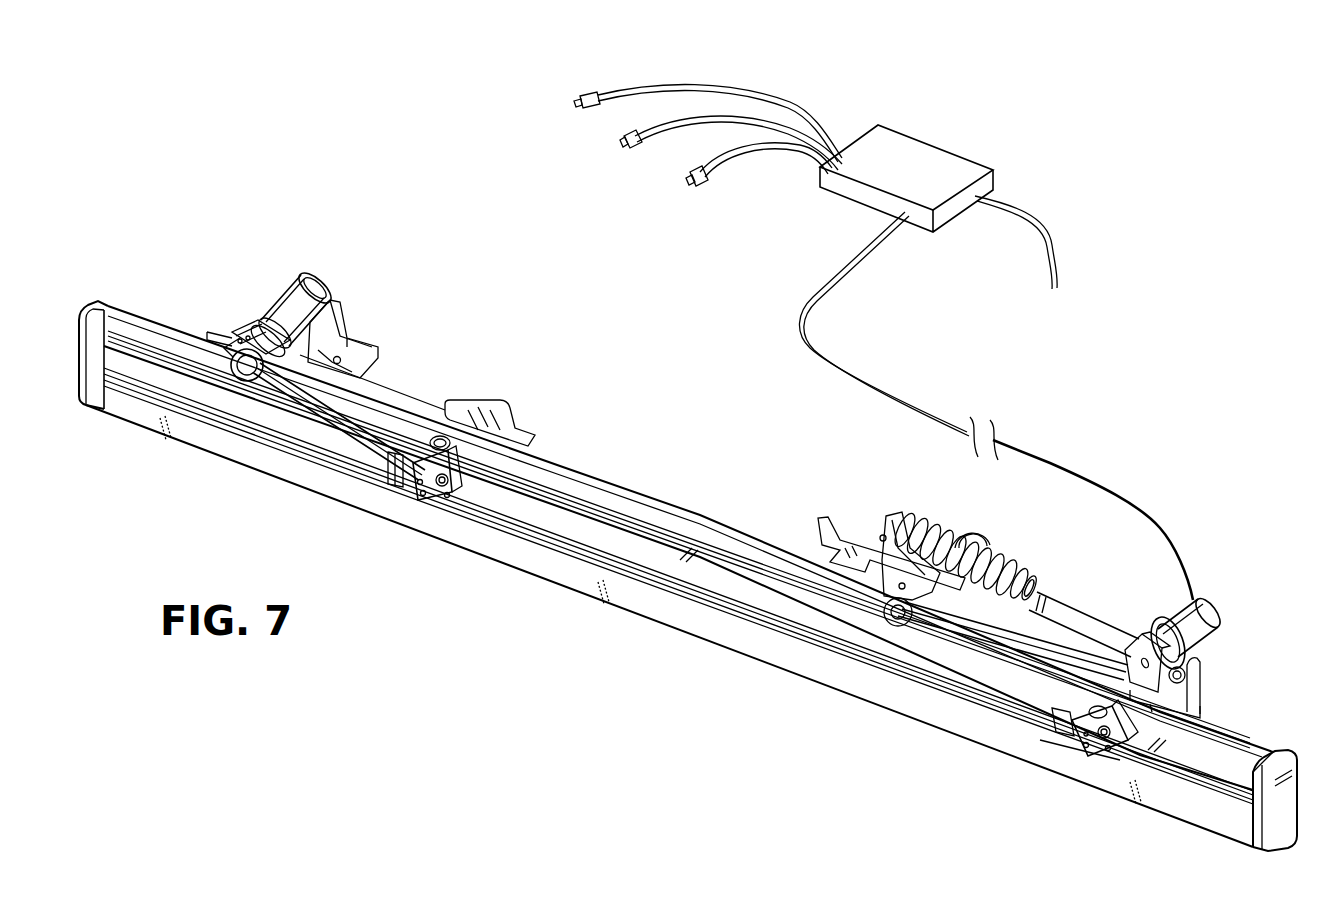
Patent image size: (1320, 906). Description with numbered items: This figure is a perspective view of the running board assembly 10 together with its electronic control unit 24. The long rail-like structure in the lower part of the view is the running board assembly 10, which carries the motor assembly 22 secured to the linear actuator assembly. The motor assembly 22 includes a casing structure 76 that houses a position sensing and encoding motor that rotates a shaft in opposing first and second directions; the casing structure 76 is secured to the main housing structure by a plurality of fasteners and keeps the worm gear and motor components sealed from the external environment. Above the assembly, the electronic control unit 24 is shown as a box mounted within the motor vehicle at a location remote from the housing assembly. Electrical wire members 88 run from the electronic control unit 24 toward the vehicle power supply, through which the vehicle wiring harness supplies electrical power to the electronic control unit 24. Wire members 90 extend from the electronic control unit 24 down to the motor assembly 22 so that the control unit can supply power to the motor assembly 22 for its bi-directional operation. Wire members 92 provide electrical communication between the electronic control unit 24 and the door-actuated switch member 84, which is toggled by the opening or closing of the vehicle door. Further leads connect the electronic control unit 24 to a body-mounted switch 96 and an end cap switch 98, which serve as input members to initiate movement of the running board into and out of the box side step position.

The running board assembly 10 is at (550, 640).
The motor assembly 22 is at (1215, 641).
The electronic control unit 24 is at (927, 145).
The casing structure 76 is at (1200, 596).
The switch member 84 is at (585, 95).
The electrical wire members 88 is at (1035, 240).
The wire members 90 is at (1160, 528).
The wire members 92 is at (770, 96).
The body-mounted switch 96 is at (638, 150).
The end cap switch 98 is at (705, 190).